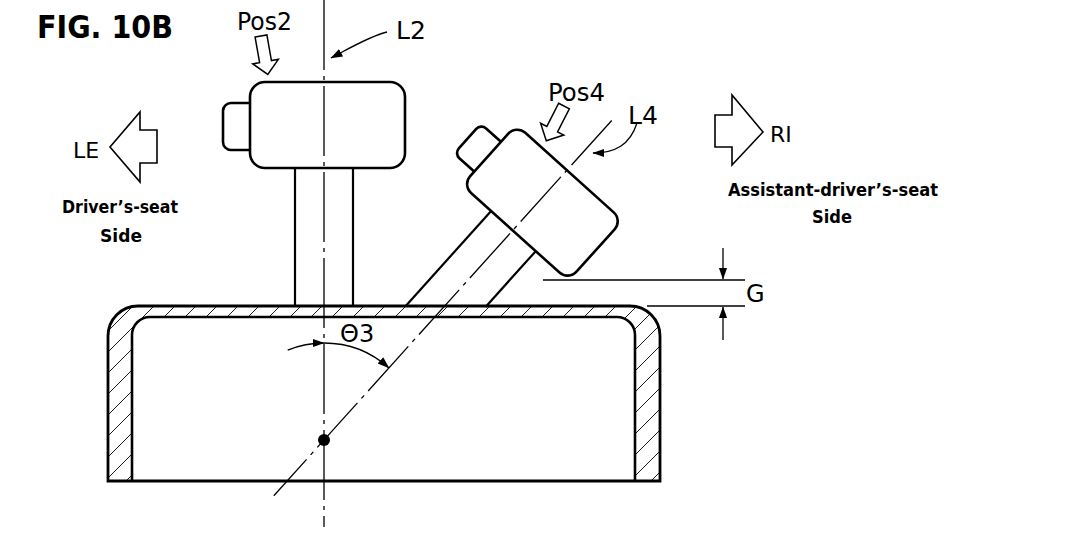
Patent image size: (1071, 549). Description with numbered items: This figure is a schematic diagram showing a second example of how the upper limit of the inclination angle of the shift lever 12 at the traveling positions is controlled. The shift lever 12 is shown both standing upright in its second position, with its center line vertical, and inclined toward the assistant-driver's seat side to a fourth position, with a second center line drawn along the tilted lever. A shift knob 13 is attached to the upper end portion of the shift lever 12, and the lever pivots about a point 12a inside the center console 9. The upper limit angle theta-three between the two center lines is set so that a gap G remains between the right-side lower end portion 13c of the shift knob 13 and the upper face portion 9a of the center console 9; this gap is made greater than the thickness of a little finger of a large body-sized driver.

The center console 9 is at (661, 418).
The upper face portion of the center console 9a is at (604, 303).
The shift lever 12 is at (457, 261).
The pivot center of shift lever 12a is at (339, 440).
The shift knob 13 is at (506, 160).
The right-side lower end portion of the shift knob 13c is at (569, 279).